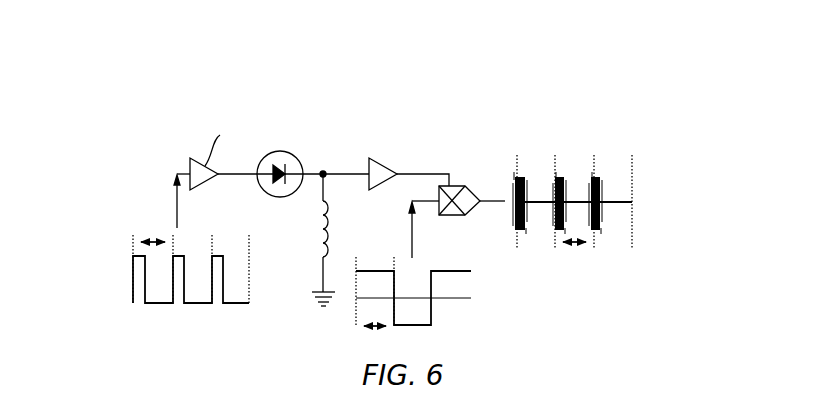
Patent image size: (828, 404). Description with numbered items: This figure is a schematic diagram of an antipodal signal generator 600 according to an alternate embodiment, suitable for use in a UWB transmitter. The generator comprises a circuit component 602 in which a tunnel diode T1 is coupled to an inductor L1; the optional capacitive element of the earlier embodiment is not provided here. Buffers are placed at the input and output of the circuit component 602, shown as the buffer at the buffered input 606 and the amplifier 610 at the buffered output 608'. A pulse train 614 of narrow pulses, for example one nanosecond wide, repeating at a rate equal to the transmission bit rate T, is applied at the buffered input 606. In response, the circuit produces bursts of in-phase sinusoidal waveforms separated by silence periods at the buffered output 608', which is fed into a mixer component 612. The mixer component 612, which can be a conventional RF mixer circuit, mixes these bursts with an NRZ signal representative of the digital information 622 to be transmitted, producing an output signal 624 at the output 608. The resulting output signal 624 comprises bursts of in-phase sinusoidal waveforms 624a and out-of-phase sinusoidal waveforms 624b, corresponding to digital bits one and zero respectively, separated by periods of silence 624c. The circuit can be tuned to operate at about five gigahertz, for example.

The antipodal signal generator 600 is at (564, 99).
The circuit component 602 is at (290, 127).
The buffered input 606 is at (177, 175).
The output 608 is at (483, 227).
The buffered output 608' is at (428, 153).
The amplifier 610 is at (386, 158).
The mixer component 612 is at (462, 186).
The pulse train 614 is at (121, 283).
The digital information 622 is at (488, 298).
The output signal 624 is at (644, 185).
The in-phase sinusoidal waveform burst 624a is at (521, 177).
The out-of-phase sinusoidal waveform burst 624b is at (562, 178).
The period of silence 624c is at (610, 204).
The tunnel diode T1 is at (278, 197).
The inductor L1 is at (318, 238).